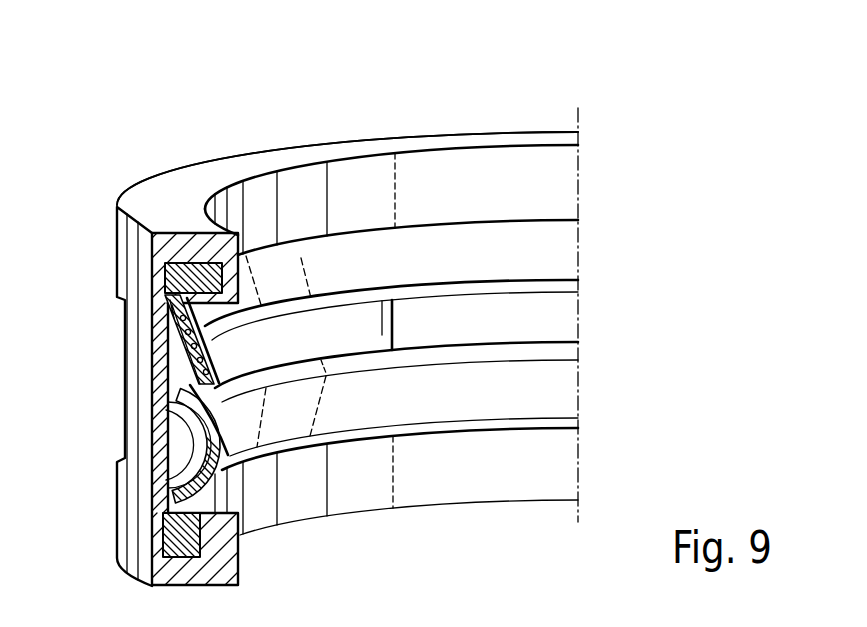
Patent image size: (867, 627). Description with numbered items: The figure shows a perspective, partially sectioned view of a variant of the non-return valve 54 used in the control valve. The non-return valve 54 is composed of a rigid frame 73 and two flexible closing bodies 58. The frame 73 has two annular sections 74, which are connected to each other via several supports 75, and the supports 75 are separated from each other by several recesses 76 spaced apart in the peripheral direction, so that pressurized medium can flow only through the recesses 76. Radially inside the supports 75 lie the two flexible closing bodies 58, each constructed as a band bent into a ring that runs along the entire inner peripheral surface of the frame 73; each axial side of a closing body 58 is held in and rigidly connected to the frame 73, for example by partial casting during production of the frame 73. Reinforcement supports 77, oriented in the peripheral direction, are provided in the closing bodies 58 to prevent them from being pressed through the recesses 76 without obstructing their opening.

The non-return valve 54 is at (128, 184).
The closing body 58 is at (553, 261).
The frame 73 is at (428, 134).
The annular section 74 is at (557, 186).
The support 75 is at (427, 318).
The recess 76 is at (379, 335).
The reinforcement support 77 is at (149, 357).